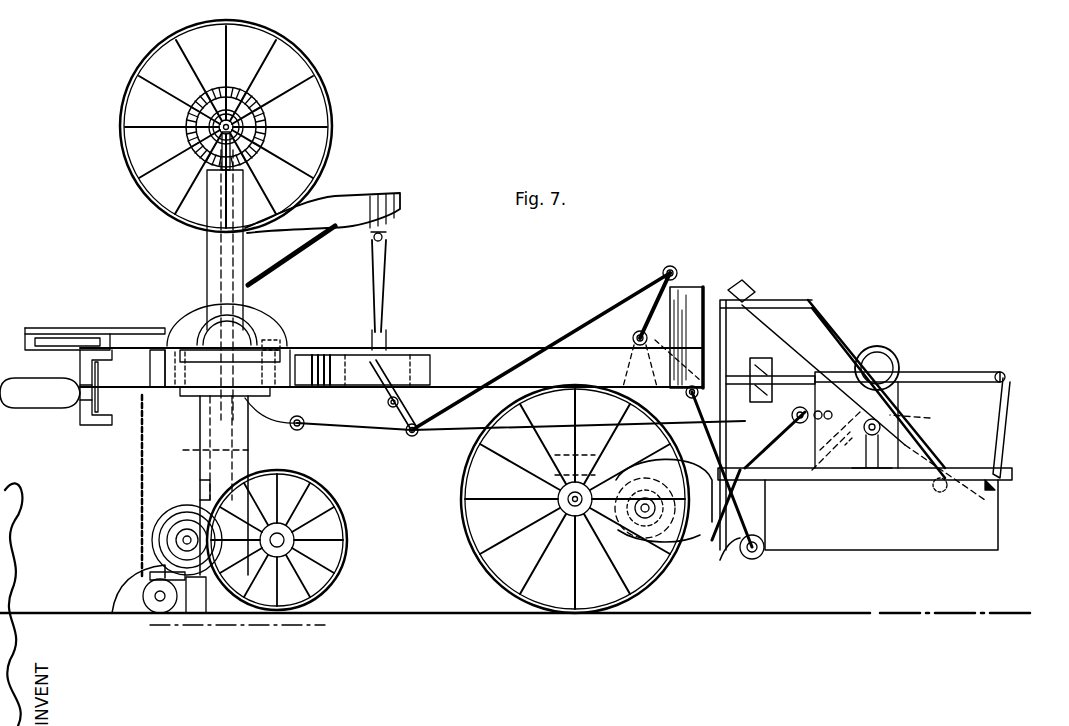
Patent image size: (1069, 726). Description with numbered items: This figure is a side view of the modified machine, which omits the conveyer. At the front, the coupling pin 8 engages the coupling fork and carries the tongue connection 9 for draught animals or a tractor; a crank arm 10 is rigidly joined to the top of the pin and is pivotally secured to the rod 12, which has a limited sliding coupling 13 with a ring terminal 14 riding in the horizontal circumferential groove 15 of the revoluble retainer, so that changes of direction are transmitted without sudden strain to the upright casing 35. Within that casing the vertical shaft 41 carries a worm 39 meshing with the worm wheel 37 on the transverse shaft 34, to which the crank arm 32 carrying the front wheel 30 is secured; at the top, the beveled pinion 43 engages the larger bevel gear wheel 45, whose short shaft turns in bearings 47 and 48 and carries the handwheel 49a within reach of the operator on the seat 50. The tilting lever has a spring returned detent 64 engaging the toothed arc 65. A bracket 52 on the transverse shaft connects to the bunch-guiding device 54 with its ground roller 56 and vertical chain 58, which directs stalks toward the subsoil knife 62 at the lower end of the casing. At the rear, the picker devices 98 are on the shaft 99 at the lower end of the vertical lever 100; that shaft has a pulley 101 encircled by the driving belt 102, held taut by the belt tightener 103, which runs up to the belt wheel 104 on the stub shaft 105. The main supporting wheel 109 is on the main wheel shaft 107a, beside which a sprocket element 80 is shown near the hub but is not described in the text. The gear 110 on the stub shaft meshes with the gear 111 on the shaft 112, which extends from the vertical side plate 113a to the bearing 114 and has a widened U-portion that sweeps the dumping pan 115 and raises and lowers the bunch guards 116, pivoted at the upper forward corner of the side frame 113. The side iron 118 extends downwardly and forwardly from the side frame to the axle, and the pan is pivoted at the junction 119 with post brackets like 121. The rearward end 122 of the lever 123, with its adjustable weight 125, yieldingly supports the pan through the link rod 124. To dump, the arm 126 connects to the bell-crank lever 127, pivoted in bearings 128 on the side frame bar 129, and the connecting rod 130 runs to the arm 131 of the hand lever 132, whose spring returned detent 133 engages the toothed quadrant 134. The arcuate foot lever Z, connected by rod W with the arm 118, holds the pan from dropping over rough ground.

The handwheel 49a is at (290, 44).
The bearing 48 is at (200, 160).
The bevel gear wheel 45 is at (262, 118).
The bearing 47 is at (243, 131).
The beveled pinion 43 is at (255, 157).
The upright casing 35 is at (210, 243).
The toothed arc 65 is at (195, 318).
The spring returned detent 64 is at (245, 300).
The horizontal circumferential groove 15 is at (250, 340).
The ring terminal 14 is at (272, 344).
The side frame bar 129 is at (483, 352).
The limited sliding coupling 13 is at (162, 345).
The rod 12 is at (106, 330).
The crank arm 10 is at (50, 336).
The coupling pin 8 is at (90, 365).
The tongue connection 9 is at (33, 400).
The toothed quadrant 134 is at (398, 352).
The spring returned detent 133 is at (368, 330).
The hand lever 132 is at (388, 283).
The seat 50 is at (350, 210).
The arm 131 is at (390, 404).
The rod W is at (448, 426).
The foot lever Z is at (277, 430).
The connecting rod 130 is at (568, 345).
The bell-crank lever 127 is at (694, 290).
The bearings 128 is at (640, 330).
The vertical lever 100 is at (618, 352).
The picker devices 98 is at (540, 505).
The pulley 101 is at (590, 545).
The main supporting wheel 109 is at (557, 502).
The main wheel shaft 107a is at (470, 487).
The sprocket 80 is at (660, 470).
The shaft 99 is at (672, 553).
The arm 126 is at (712, 455).
The post bracket 121 is at (745, 560).
The pivotal junction 119 is at (762, 553).
The side iron 118 is at (748, 480).
The driving belt 102 is at (755, 434).
The belt tightener 103 is at (790, 412).
The side frame 113 is at (722, 300).
The bunch guards 116 is at (780, 330).
The lever 123 is at (742, 372).
The adjustable weight 125 is at (774, 376).
The belt wheel 104 is at (885, 352).
The vertical side plate 113a is at (872, 352).
The stub shaft 105 is at (898, 370).
The gear 110 is at (900, 396).
The gear 111 is at (891, 440).
The rearward end 122 is at (1002, 372).
The link rod 124 is at (994, 428).
The shaft 112 is at (862, 437).
The bearing 114 is at (880, 480).
The dumping pan 115 is at (865, 509).
The front wheel 30 is at (330, 482).
The worm 39 is at (302, 478).
The worm wheel 37 is at (195, 500).
The transverse shaft 34 is at (170, 536).
The crank arm 32 is at (176, 548).
The vertical shaft 41 is at (180, 450).
The vertical chain 58 is at (140, 470).
The bracket 52 is at (148, 575).
The bunch-guiding device 54 is at (128, 597).
The roller 56 is at (150, 612).
The subsoil knife 62 is at (235, 626).